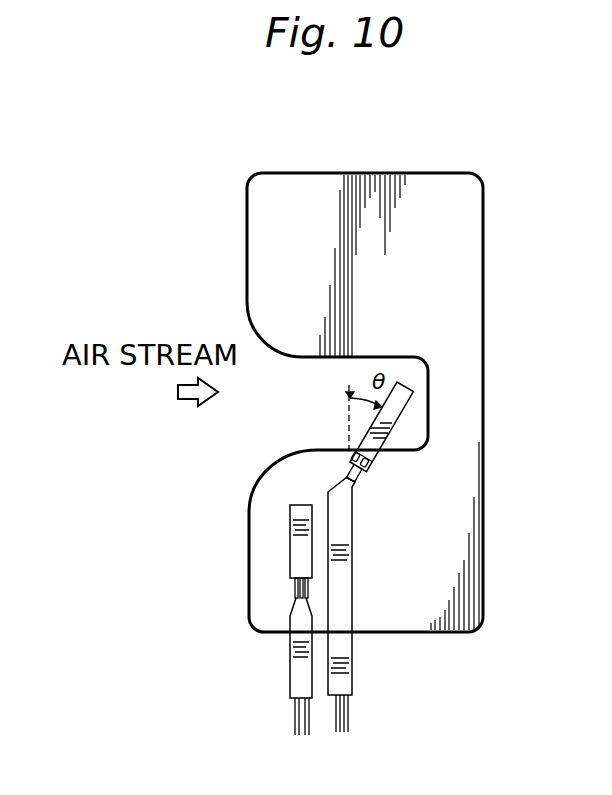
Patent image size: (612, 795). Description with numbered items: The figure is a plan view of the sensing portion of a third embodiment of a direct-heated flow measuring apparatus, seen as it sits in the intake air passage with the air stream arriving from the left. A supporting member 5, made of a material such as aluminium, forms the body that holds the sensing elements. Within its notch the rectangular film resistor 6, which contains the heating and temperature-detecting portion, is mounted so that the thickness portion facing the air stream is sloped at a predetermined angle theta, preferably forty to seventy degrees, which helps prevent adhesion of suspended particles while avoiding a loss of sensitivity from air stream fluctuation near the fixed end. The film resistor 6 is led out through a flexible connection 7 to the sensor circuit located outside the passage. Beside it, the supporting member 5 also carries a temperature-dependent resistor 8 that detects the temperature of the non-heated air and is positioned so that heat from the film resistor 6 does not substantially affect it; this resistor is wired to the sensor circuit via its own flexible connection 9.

The supporting member 5 is at (475, 292).
The film resistor 6 is at (402, 405).
The flexible connection 7 is at (345, 581).
The temperature-dependent resistor 8 is at (295, 545).
The flexible connection 9 is at (295, 677).